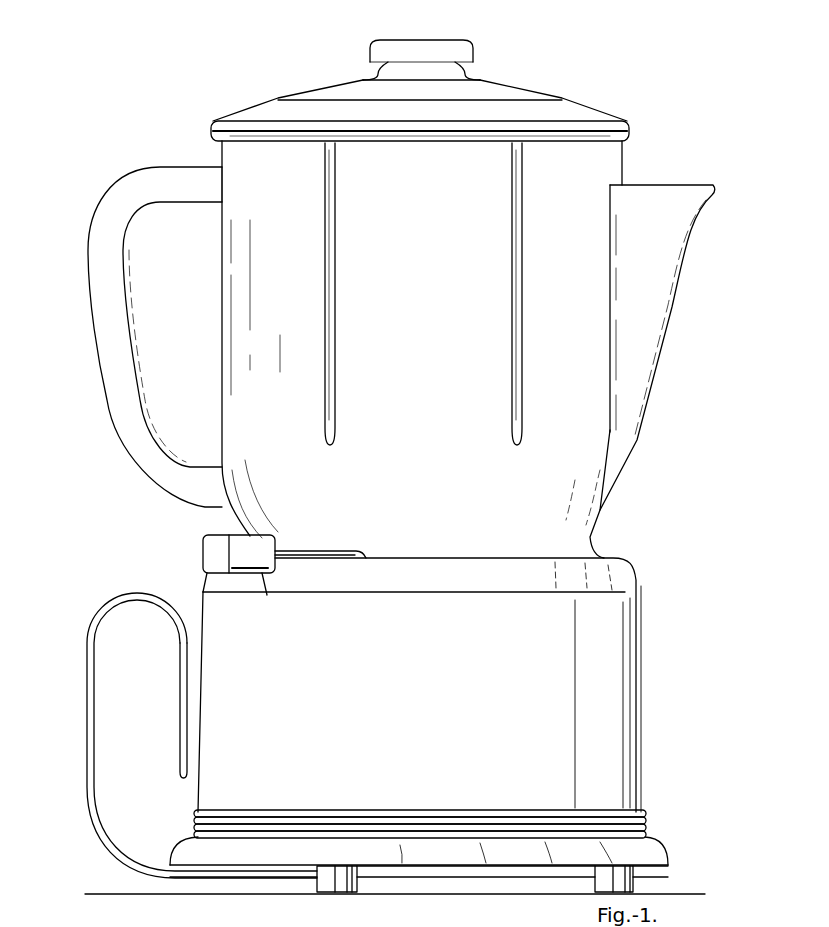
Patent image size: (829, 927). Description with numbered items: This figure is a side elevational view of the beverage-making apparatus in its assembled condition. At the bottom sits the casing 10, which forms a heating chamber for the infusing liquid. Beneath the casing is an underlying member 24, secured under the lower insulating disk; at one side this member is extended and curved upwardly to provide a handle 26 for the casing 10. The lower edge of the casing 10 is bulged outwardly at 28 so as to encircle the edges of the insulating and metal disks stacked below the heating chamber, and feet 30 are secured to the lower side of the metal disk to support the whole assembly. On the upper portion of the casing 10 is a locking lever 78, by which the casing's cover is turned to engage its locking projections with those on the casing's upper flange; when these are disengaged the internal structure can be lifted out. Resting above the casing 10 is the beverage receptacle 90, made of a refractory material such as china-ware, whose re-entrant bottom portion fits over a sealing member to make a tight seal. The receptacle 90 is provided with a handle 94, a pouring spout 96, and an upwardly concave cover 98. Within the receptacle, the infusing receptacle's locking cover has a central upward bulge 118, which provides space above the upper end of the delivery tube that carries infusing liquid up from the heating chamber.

The casing 10 is at (588, 613).
The underlying member 24 is at (525, 870).
The handle 26 is at (88, 715).
The outwardly bulged lower edge 28 is at (667, 862).
The feet 30 is at (332, 887).
The locking lever 78 is at (262, 586).
The beverage receptacle 90 is at (570, 508).
The handle 94 is at (107, 328).
The pouring spout 96 is at (648, 307).
The cover 98 is at (590, 113).
The upward bulge 118 is at (199, 924).